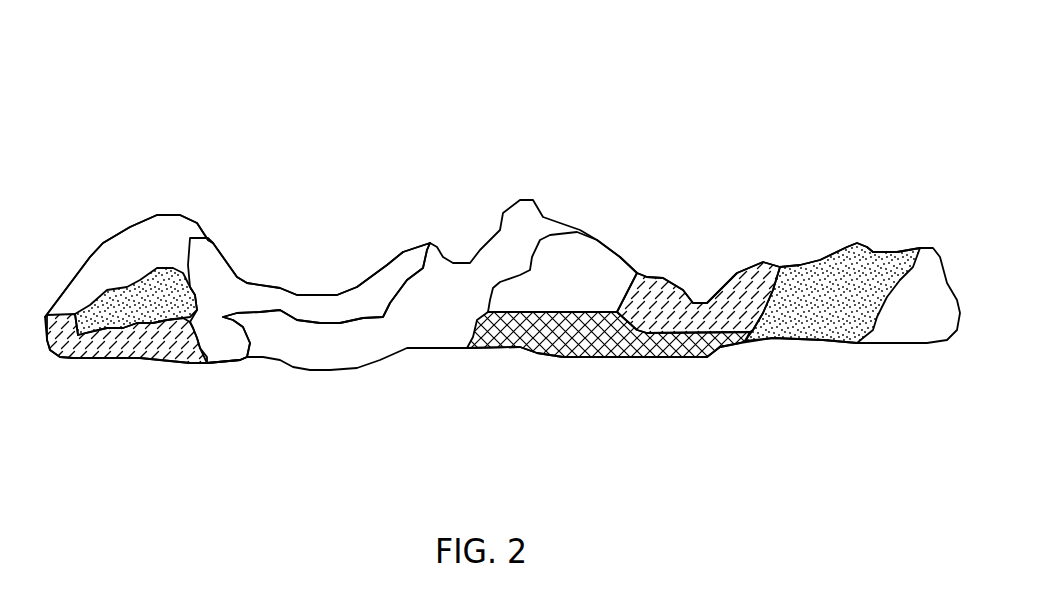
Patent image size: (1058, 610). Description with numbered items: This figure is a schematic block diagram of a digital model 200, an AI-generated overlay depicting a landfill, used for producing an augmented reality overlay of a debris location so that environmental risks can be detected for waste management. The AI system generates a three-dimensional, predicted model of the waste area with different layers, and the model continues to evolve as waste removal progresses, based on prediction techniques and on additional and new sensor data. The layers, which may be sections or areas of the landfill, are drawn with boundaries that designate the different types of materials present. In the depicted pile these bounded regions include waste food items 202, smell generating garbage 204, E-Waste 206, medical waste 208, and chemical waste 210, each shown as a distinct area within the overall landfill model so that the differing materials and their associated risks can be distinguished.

The digital model 200 is at (150, 56).
The waste food items 202 is at (155, 230).
The smell generating garbage 204 is at (145, 313).
The E-Waste 206 is at (172, 342).
The medical waste 208 is at (223, 277).
The chemical waste 210 is at (538, 338).